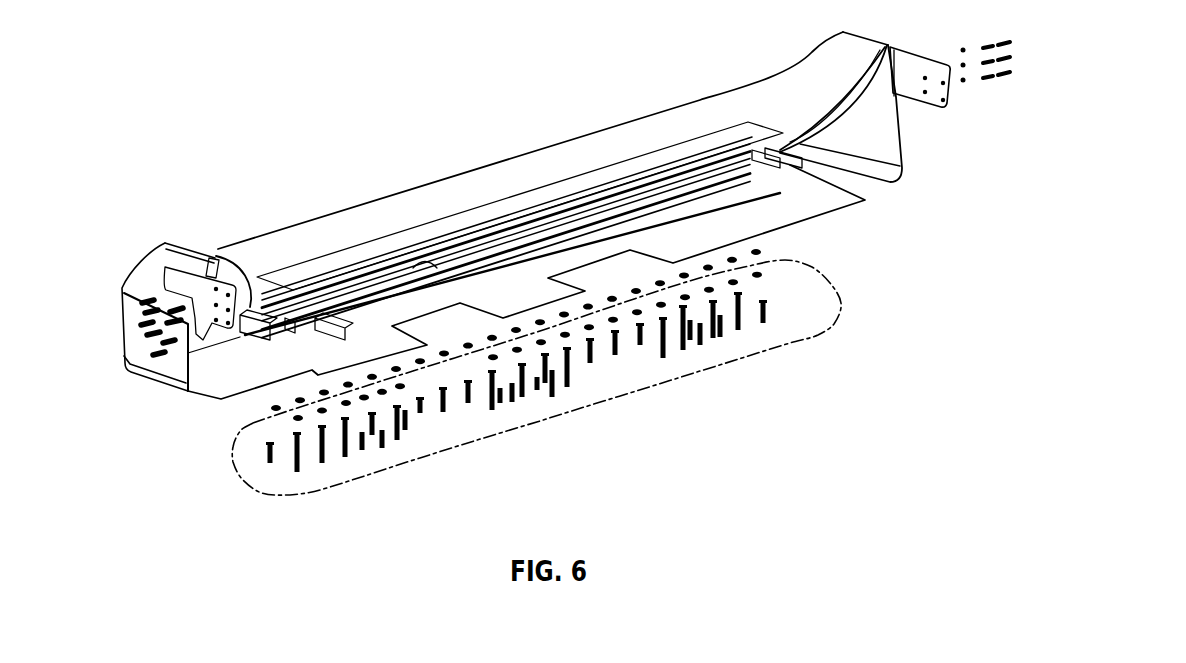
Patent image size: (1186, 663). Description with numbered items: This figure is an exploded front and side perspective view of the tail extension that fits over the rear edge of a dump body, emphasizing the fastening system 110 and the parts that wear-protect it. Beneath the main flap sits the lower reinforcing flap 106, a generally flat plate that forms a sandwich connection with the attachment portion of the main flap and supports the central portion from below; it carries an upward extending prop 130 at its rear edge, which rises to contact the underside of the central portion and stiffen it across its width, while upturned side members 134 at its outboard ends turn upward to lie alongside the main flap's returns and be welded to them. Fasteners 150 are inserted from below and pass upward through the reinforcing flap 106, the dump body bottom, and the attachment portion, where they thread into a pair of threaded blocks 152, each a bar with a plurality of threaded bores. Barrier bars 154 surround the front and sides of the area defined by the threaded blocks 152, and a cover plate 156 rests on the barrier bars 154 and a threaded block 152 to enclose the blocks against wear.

The lower reinforcing flap 106 is at (905, 128).
The fastening system 110 is at (422, 274).
The upward extending prop 130 is at (778, 228).
The upturned side member 134 is at (171, 373).
The fasteners 150 is at (408, 408).
The threaded block 152 is at (575, 205).
The barrier bars 154 is at (214, 262).
The cover plate 156 is at (682, 152).